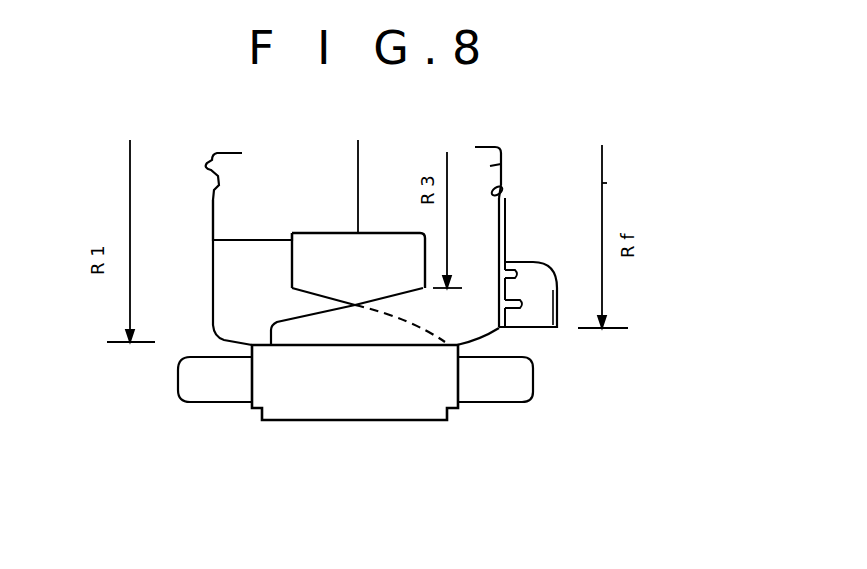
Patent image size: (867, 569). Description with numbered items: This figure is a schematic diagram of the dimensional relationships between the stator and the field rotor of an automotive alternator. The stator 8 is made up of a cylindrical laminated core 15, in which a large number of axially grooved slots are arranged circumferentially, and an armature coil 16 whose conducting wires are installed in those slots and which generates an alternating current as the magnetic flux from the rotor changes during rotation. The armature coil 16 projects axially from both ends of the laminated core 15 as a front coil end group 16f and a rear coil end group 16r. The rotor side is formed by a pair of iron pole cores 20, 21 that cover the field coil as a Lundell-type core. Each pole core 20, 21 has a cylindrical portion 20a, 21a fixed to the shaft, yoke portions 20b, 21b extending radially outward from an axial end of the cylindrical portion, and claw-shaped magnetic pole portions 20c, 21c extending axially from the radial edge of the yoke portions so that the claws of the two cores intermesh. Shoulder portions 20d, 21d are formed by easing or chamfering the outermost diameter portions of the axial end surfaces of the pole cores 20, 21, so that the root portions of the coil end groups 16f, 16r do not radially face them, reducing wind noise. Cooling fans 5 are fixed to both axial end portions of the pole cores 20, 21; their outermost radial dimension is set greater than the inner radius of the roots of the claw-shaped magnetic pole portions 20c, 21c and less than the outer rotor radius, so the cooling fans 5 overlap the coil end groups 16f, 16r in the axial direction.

The pole core 21 is at (207, 166).
The cylindrical portion 21a is at (240, 212).
The yoke portion 21b is at (235, 283).
The claw-shaped magnetic pole portion 21c is at (317, 305).
The shoulder portion 21d is at (229, 339).
The pole core 20 is at (488, 168).
The cylindrical portion 20a is at (465, 198).
The yoke portion 20b is at (480, 257).
The claw-shaped magnetic pole portion 20c is at (407, 305).
The shoulder portion 20d is at (490, 341).
The cooling fan 5 is at (535, 263).
The laminated core 15 is at (415, 411).
The armature coil 16 is at (172, 368).
The coil end group 16r is at (193, 390).
The coil end group 16f is at (525, 388).
The stator 8 is at (260, 423).